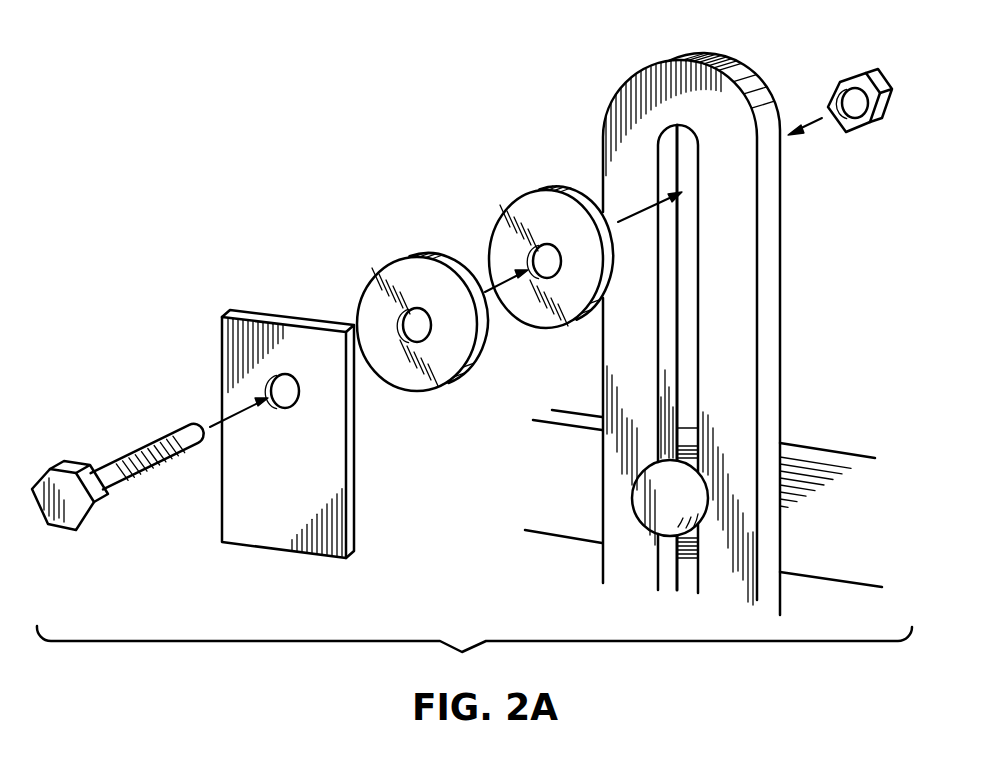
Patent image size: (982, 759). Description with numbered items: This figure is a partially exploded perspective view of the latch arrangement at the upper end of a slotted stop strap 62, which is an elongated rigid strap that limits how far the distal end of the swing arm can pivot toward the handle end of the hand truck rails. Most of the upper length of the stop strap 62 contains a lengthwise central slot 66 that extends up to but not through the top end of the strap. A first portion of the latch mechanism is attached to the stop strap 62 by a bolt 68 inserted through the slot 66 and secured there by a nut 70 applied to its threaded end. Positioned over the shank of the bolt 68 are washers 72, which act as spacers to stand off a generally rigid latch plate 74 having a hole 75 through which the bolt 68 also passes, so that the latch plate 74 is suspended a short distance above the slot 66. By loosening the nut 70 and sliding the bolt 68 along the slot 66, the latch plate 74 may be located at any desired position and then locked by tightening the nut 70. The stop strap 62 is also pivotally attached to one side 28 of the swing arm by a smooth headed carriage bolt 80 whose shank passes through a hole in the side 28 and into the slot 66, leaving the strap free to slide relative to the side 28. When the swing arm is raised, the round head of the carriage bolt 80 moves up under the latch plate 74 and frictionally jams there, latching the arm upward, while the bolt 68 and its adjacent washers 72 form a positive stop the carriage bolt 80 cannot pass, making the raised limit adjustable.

The side 28 is at (818, 490).
The stop strap 62 is at (782, 225).
The central slot 66 is at (685, 302).
The bolt 68 is at (132, 452).
The nut 70 is at (843, 80).
The washers 72 is at (410, 257).
The latch plate 74 is at (355, 482).
The hole 75 is at (288, 378).
The carriage bolt 80 is at (645, 497).